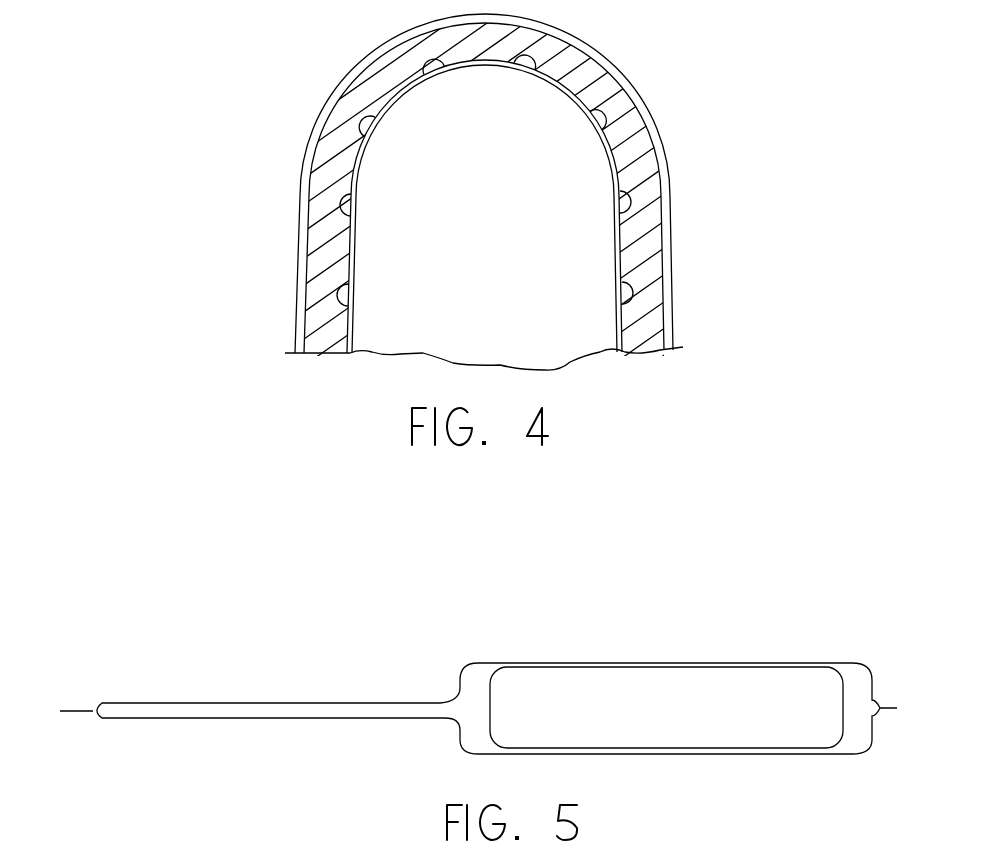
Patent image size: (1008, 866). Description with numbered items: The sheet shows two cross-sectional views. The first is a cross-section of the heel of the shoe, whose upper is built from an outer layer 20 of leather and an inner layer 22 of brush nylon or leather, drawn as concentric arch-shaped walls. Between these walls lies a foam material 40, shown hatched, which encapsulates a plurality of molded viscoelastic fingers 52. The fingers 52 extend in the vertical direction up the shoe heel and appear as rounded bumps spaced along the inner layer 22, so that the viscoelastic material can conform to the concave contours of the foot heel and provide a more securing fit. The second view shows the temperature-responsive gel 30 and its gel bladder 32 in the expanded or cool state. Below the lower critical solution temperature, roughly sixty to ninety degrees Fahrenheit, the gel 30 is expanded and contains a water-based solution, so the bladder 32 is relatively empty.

In FIG. 4, the outer layer 20 is at (653, 148).
In FIG. 4, the foam material 40 is at (656, 205).
In FIG. 4, the inner layer 22 is at (613, 272).
In FIG. 4, the viscoelastic fingers 52 is at (433, 68).
In FIG. 5, the gel bladder 32 is at (436, 694).
In FIG. 5, the temperature-responsive gel 30 is at (723, 722).